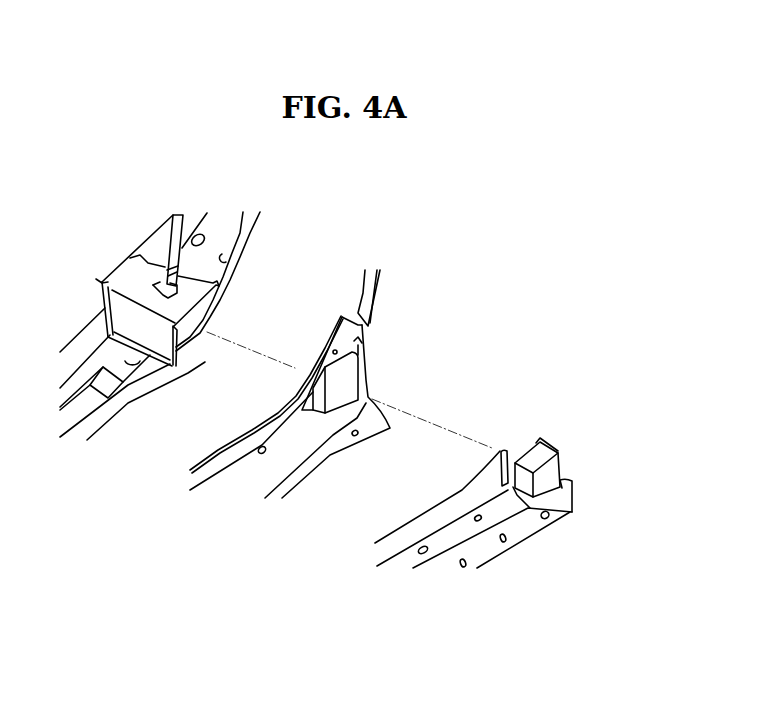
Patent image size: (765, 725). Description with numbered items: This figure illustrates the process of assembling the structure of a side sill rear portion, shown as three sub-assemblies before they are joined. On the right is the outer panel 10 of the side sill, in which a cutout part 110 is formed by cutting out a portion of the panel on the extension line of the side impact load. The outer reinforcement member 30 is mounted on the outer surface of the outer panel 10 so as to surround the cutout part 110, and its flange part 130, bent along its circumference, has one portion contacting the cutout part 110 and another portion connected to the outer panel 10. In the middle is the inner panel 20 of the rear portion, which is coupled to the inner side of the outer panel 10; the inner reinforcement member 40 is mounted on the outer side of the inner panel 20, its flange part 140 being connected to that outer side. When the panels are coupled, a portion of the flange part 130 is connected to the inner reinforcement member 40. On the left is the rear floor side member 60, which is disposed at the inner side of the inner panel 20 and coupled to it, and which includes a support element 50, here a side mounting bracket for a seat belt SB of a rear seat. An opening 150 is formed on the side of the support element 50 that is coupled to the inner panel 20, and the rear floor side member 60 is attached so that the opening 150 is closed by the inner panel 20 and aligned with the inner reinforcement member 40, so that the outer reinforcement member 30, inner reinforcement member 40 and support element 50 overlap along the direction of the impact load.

The outer panel 10 is at (523, 525).
The inner panel 20 is at (233, 478).
The outer reinforcement member 30 is at (552, 470).
The inner reinforcement member 40 is at (357, 370).
The support element 50 is at (138, 280).
The rear floor side member 60 is at (222, 230).
The cutout part 110 is at (508, 442).
The flange part 130 is at (545, 432).
The flange part 140 is at (358, 340).
The opening 150 is at (192, 336).
The seat belt SB is at (168, 216).